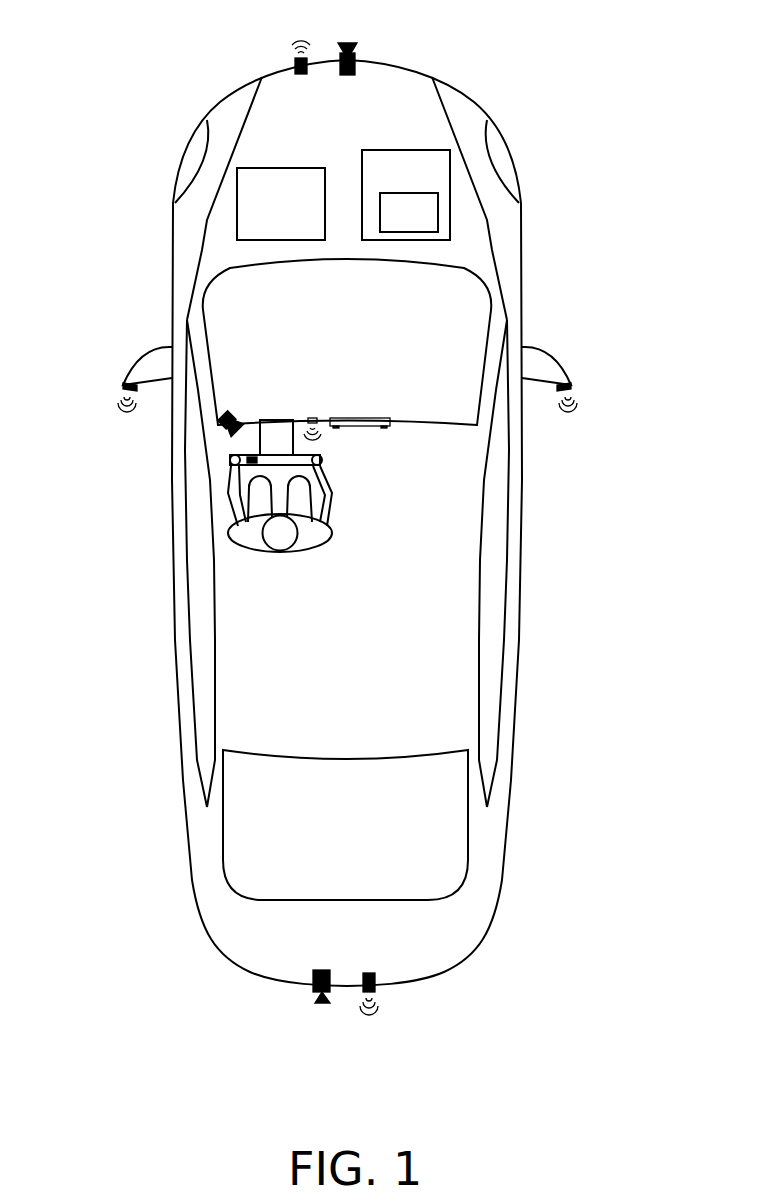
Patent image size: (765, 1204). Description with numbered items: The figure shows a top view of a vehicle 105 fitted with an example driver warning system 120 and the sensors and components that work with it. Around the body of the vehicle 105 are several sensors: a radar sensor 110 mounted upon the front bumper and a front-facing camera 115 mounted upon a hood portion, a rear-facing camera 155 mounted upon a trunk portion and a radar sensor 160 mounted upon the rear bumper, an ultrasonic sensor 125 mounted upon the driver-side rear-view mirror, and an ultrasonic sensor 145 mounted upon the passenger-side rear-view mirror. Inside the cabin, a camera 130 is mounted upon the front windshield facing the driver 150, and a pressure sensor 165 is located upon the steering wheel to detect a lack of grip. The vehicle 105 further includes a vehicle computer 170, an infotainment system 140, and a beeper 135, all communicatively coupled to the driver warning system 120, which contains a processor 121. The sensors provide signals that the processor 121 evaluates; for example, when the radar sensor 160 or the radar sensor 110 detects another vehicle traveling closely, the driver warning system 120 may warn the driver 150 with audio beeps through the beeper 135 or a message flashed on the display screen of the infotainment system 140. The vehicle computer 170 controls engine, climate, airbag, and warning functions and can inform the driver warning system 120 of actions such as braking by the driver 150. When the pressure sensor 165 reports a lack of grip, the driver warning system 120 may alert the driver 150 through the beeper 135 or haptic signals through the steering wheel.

The vehicle 105 is at (152, 108).
The radar sensor 110 is at (295, 63).
The front-facing camera 115 is at (355, 60).
The driver warning system 120 is at (387, 184).
The processor 121 is at (390, 224).
The ultrasonic sensor 125 is at (123, 386).
The camera 130 is at (236, 411).
The beeper 135 is at (312, 417).
The infotainment system 140 is at (377, 417).
The ultrasonic sensor 145 is at (571, 387).
The driver 150 is at (290, 552).
The rear-facing camera 155 is at (323, 970).
The radar sensor 160 is at (368, 973).
The pressure sensor 165 is at (255, 465).
The vehicle computer 170 is at (262, 214).